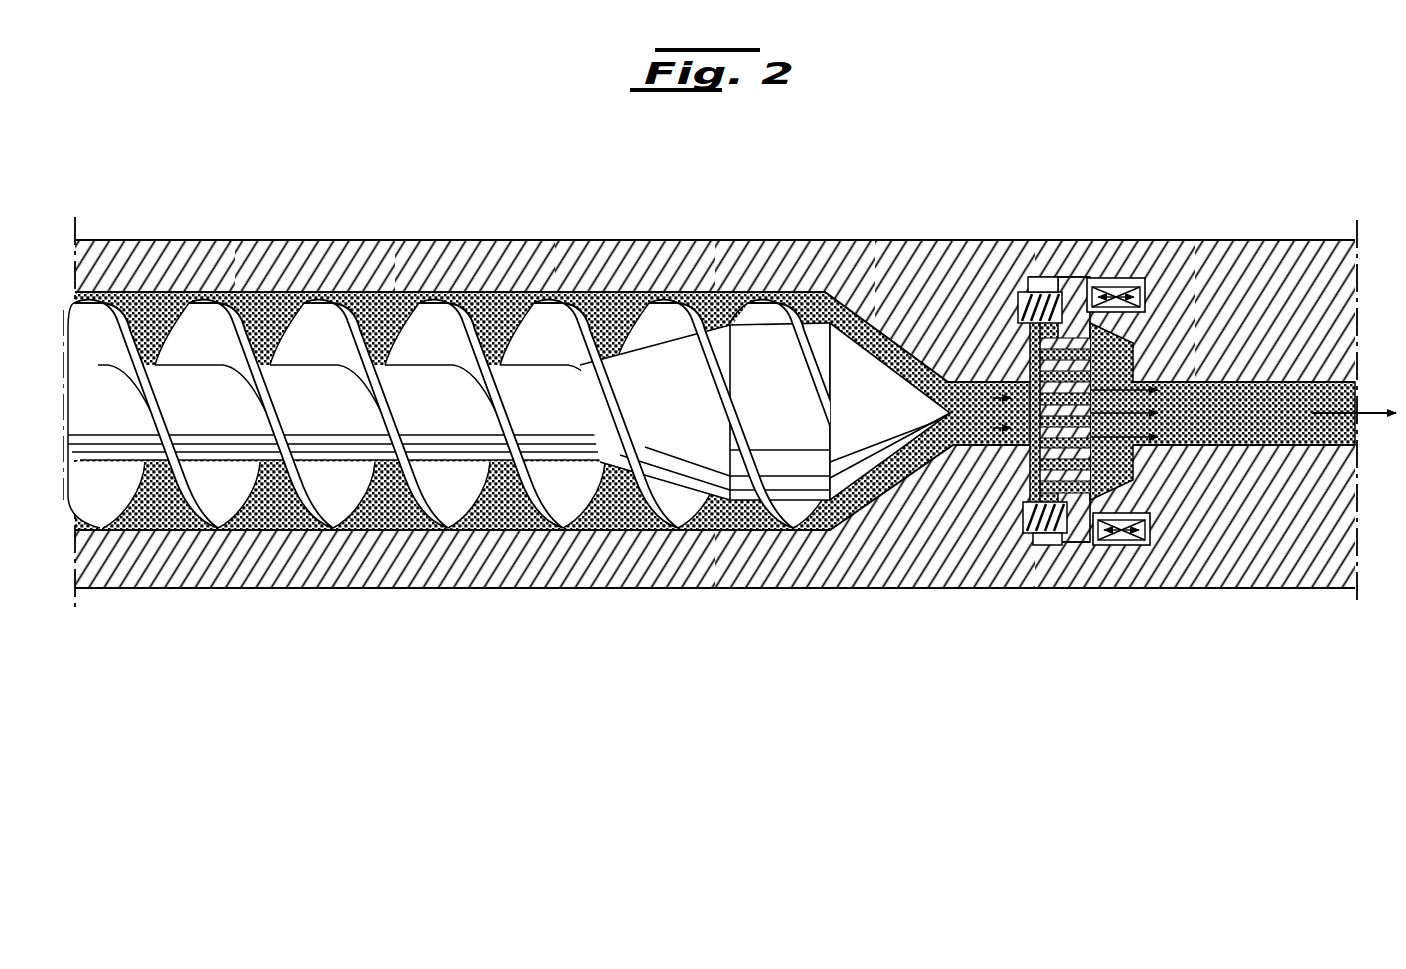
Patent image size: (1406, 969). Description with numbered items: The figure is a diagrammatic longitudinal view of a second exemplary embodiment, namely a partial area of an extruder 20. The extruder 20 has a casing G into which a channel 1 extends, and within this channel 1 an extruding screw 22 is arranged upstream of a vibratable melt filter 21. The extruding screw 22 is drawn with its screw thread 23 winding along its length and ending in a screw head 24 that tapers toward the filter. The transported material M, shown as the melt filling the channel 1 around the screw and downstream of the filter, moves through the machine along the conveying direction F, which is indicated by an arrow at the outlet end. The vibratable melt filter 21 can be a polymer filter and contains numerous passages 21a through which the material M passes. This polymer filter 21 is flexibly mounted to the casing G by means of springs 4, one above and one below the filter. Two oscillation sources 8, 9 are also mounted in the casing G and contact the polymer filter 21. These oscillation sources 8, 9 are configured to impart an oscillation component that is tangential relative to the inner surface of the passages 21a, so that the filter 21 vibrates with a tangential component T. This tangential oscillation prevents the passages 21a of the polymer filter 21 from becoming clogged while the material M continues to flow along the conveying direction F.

The extruder 20 is at (238, 238).
The extruding screw 22 is at (392, 310).
The casing G is at (657, 280).
The channel 1 is at (1215, 400).
The springs 4 is at (1040, 290).
The vibratable melt filter 21 is at (1071, 270).
The passages 21a is at (1035, 465).
The oscillation source 9 is at (1110, 285).
The oscillation source 8 is at (1113, 535).
The tangential component T is at (1123, 285).
The screw thread 23 is at (638, 500).
The screw head 24 is at (810, 480).
The transported material M is at (272, 500).
The conveying direction F is at (1354, 391).